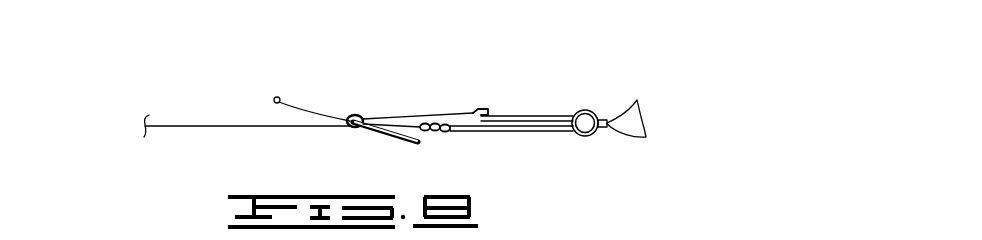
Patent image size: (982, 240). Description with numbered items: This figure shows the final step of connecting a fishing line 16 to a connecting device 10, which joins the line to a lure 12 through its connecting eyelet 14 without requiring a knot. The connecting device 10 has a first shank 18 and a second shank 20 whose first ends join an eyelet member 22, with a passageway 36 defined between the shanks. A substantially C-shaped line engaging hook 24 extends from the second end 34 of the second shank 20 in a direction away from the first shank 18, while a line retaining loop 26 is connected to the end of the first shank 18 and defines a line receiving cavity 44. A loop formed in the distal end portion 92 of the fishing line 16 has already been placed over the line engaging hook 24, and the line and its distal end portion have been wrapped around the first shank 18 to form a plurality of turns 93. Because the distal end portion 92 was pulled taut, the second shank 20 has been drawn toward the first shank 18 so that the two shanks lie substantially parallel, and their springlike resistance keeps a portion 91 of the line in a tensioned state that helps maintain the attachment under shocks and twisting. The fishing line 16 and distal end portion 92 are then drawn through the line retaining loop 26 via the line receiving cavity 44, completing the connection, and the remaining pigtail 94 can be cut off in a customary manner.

The connecting device 10 is at (541, 49).
The lure 12 is at (626, 106).
The connecting eyelet 14 is at (603, 127).
The fishing line 16 is at (181, 127).
The first shank 18 is at (553, 138).
The second shank 20 is at (533, 111).
The eyelet member 22 is at (587, 99).
The line engaging hook 24 is at (483, 104).
The line retaining loop 26 is at (353, 108).
The second end of the second shank 34 is at (513, 115).
The passageway 36 is at (538, 133).
The line receiving cavity 44 is at (363, 130).
The portion of the distal end portion 91 is at (472, 112).
The distal end portion 92 is at (288, 128).
The turns 93 is at (440, 132).
The pigtail 94 is at (274, 97).